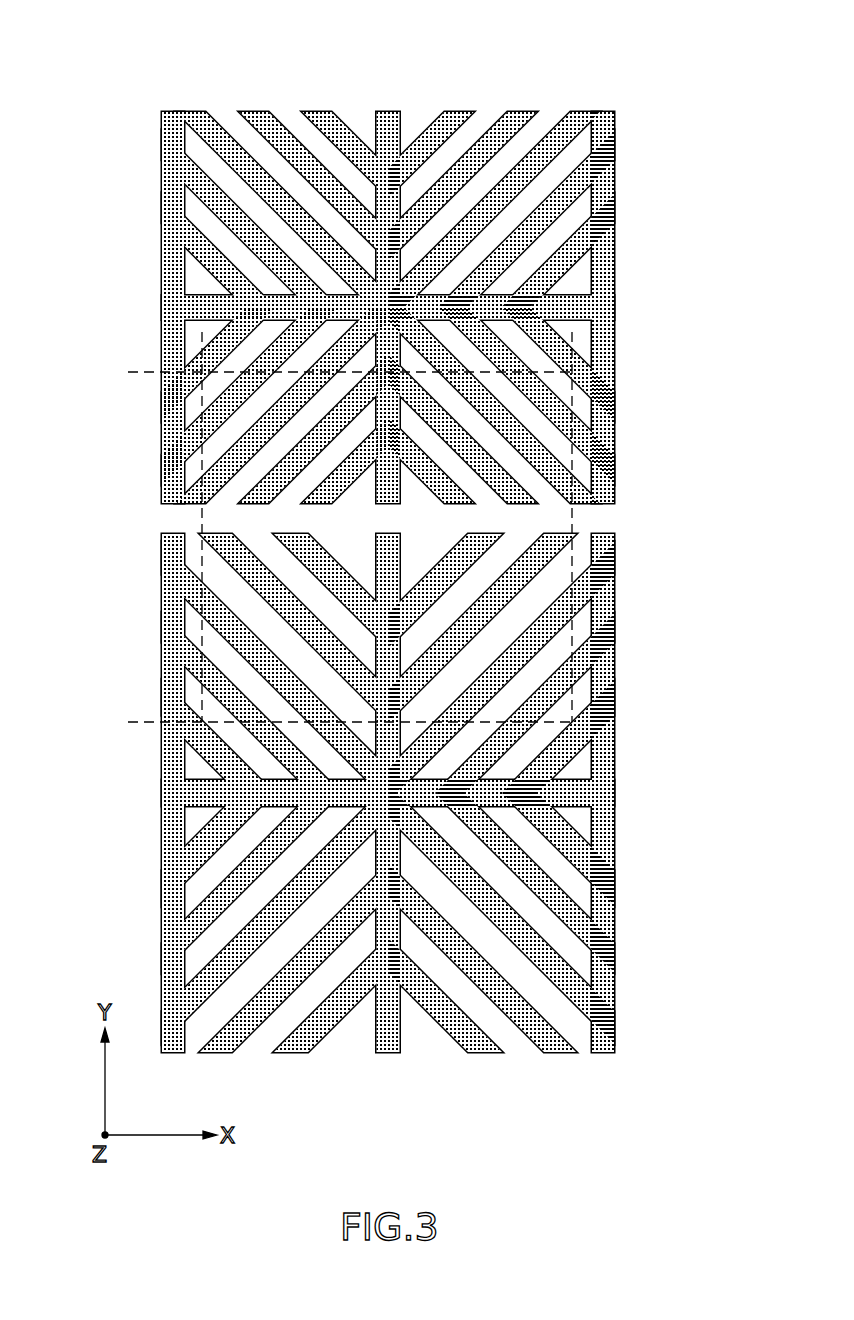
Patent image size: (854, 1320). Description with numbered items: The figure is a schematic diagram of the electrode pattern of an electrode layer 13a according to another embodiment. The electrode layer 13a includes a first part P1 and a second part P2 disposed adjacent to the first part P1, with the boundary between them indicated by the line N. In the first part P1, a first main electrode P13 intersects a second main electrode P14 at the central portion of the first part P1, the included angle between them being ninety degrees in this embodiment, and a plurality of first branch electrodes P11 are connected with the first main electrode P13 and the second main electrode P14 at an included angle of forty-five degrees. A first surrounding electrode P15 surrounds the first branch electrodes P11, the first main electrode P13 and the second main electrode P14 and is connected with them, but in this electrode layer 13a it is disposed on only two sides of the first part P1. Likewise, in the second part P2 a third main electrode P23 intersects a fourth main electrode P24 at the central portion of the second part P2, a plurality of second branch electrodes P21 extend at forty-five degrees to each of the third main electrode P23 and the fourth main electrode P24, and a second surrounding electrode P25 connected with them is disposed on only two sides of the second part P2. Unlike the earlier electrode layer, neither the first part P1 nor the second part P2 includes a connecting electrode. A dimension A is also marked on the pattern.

The electrode layer 13a is at (380, 566).
The first part P1 is at (386, 283).
The first branch electrodes P11 is at (543, 457).
The first main electrode P13 is at (598, 318).
The second main electrode P14 is at (391, 128).
The first surrounding electrode P15 is at (613, 175).
The second part P2 is at (384, 816).
The second branch electrodes P21 is at (548, 620).
The third main electrode P23 is at (578, 792).
The fourth main electrode P24 is at (387, 1045).
The second surrounding electrode P25 is at (613, 898).
The boundary between electrode portions N is at (572, 525).
The width of pixel electrode region A is at (130, 715).